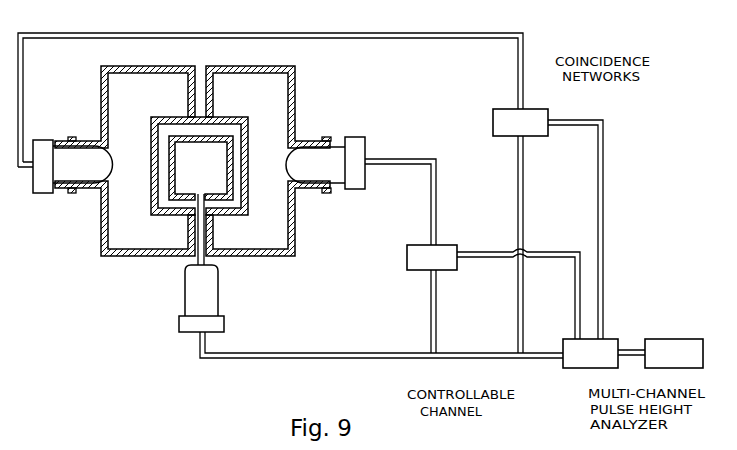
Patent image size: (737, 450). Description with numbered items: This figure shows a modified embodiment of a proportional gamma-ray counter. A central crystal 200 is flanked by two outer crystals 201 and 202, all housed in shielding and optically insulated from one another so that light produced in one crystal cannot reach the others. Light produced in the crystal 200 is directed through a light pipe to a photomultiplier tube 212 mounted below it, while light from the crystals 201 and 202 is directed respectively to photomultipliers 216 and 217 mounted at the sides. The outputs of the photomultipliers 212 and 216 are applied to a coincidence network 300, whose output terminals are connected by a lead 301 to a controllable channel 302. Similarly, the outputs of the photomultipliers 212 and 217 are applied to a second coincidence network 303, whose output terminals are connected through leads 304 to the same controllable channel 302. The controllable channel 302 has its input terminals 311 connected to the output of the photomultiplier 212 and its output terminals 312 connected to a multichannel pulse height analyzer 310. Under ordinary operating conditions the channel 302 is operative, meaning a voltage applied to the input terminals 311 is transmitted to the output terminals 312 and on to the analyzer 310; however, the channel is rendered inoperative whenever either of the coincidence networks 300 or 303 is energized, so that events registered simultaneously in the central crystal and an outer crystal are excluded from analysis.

The crystal 200 is at (203, 150).
The crystal 201 is at (272, 90).
The crystal 202 is at (130, 78).
The photomultiplier tube 212 is at (210, 298).
The photomultiplier 216 is at (302, 155).
The photomultiplier 217 is at (62, 152).
The coincidence network 300 is at (440, 246).
The lead 301 is at (575, 303).
The controllable channel 302 is at (576, 362).
The coincidence network 303 is at (538, 118).
The leads 304 is at (600, 237).
The multichannel pulse height analyzer 310 is at (703, 360).
The input terminals 311 is at (545, 358).
The output terminals 312 is at (628, 350).